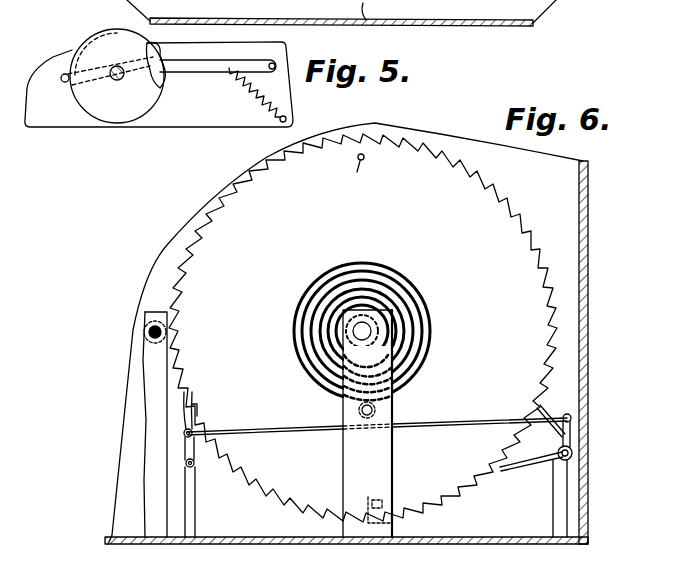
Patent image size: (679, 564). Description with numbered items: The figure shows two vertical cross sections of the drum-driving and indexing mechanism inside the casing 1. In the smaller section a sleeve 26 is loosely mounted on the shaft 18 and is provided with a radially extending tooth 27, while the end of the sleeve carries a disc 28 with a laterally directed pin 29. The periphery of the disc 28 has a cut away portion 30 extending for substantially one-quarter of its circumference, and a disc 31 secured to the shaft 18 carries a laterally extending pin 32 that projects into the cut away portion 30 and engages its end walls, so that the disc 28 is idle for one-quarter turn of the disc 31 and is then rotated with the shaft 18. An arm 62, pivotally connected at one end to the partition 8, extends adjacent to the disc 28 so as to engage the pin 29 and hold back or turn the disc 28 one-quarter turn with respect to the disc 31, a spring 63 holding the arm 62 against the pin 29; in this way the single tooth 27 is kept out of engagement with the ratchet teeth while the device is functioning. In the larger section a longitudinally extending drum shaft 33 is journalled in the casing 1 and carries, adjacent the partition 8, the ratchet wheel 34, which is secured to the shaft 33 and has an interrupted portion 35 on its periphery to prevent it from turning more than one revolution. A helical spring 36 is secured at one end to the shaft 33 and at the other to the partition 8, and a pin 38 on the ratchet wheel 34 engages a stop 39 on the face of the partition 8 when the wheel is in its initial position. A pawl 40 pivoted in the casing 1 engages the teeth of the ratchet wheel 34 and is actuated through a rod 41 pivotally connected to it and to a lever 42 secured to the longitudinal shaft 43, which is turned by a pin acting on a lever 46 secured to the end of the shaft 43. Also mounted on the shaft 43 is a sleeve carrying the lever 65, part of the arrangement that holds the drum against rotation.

In FIG. 6, the casing 1 is at (586, 193).
In FIG. 5, the partition 8 is at (170, 118).
In FIG. 6, the partition 8 is at (157, 386).
In FIG. 5, the shaft 18 is at (115, 80).
In FIG. 6, the shaft 18 is at (150, 338).
In FIG. 6, the sleeve 26 is at (150, 332).
In FIG. 6, the radially extending tooth 27 is at (172, 333).
In FIG. 5, the disc 28 is at (163, 78).
In FIG. 5, the laterally directed pin 29 is at (167, 64).
In FIG. 5, the cut away portion 30 is at (80, 52).
In FIG. 5, the disc 31 is at (82, 100).
In FIG. 5, the laterally extending pin 32 is at (118, 30).
In FIG. 6, the drum shaft 33 is at (390, 322).
In FIG. 6, the ratchet wheel 34 is at (474, 192).
In FIG. 6, the interrupted portion 35 is at (552, 322).
In FIG. 6, the helical spring 36 is at (383, 267).
In FIG. 6, the pin 38 is at (368, 176).
In FIG. 6, the stop 39 is at (395, 505).
In FIG. 6, the pawl 40 is at (196, 423).
In FIG. 6, the rod 41 is at (313, 430).
In FIG. 6, the lever 42 is at (572, 430).
In FIG. 6, the longitudinal shaft 43 is at (575, 453).
In FIG. 6, the lever 46 is at (523, 462).
In FIG. 5, the arm 62 is at (208, 64).
In FIG. 5, the spring 63 is at (250, 100).
In FIG. 6, the lever 65 is at (544, 414).